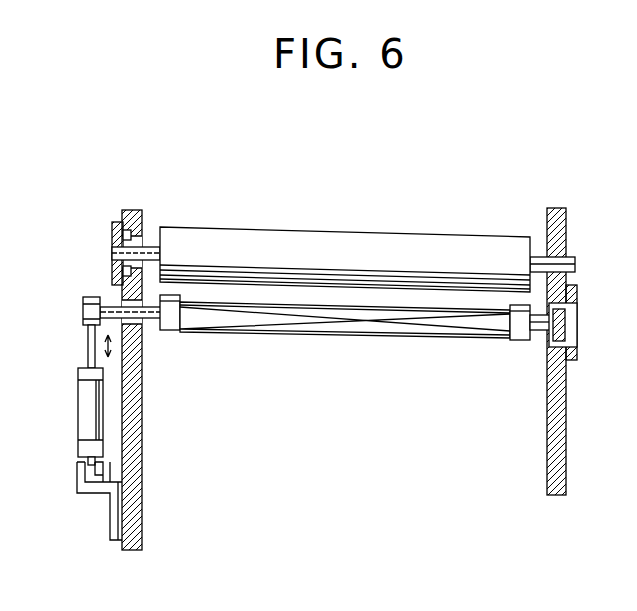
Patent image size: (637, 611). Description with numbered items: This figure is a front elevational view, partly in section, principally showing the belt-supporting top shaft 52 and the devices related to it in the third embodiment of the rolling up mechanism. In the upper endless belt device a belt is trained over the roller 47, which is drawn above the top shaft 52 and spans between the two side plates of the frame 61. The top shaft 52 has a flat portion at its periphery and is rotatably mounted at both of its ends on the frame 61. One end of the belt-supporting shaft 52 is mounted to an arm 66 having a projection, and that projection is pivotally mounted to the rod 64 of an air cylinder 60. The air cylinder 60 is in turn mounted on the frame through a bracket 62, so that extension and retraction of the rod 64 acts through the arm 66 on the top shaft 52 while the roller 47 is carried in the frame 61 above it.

The roller 47 is at (196, 227).
The top shaft 52 is at (187, 320).
The air cylinder 60 is at (78, 416).
The frame 61 is at (143, 425).
The bracket 62 is at (110, 512).
The rod 64 is at (88, 349).
The arm 66 is at (83, 312).